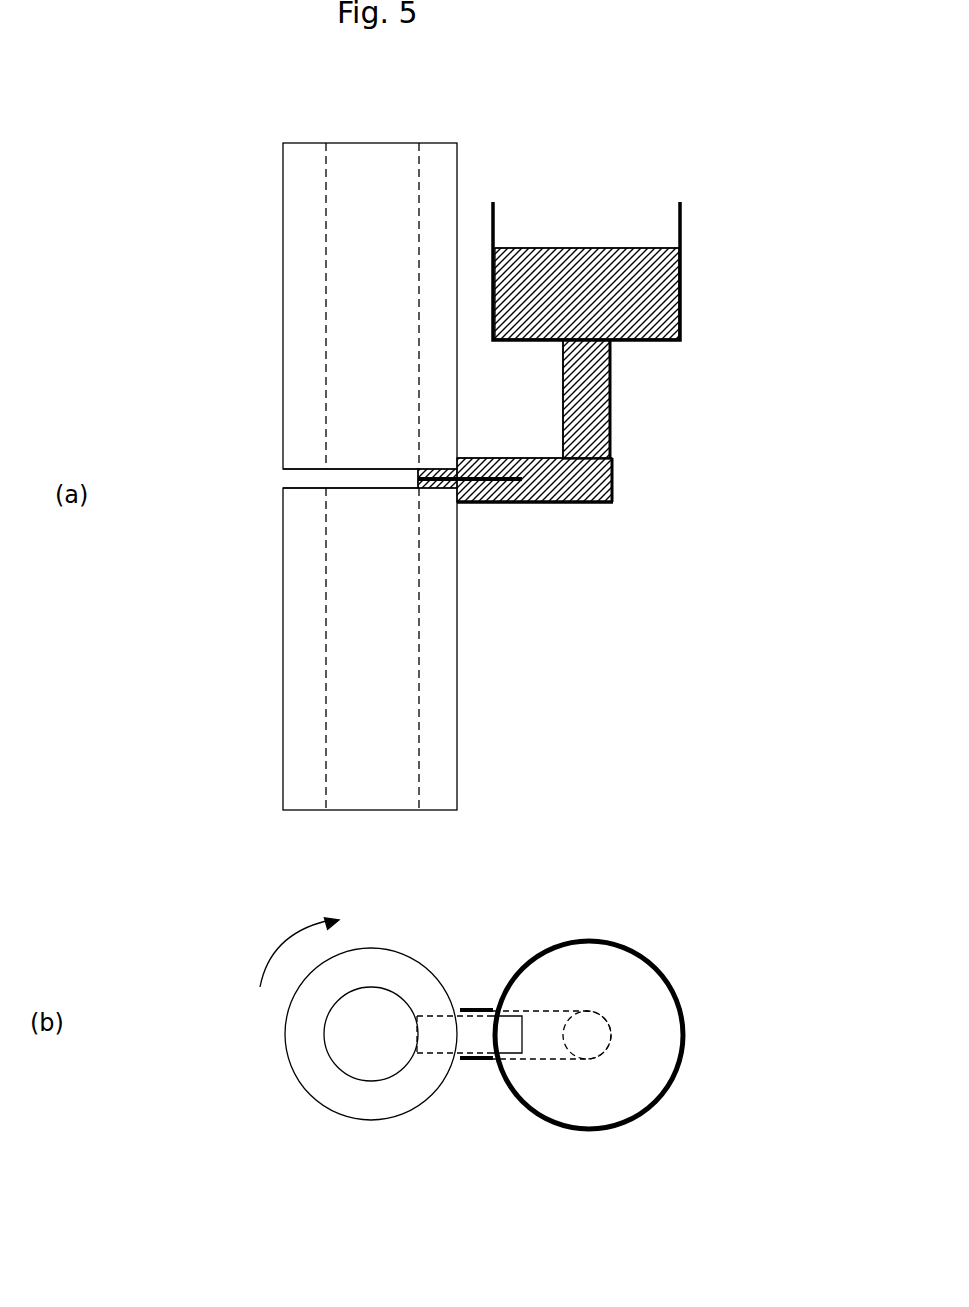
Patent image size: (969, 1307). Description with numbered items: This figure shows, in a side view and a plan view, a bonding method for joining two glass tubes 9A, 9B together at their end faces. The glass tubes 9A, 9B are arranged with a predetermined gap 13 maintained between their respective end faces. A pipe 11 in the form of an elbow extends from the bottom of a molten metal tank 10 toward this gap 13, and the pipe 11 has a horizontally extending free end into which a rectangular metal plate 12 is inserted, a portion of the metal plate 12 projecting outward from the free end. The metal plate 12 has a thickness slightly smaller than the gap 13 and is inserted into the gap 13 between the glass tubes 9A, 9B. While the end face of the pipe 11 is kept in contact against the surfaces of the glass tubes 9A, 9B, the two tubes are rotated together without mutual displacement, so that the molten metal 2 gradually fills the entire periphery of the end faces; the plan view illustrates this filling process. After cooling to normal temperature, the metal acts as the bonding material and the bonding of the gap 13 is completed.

The molten metal 2 is at (585, 247).
The glass tube 9A is at (283, 295).
The glass tube 9B is at (284, 620).
The molten metal tank 10 is at (682, 304).
The pipe 11 is at (612, 420).
The metal plate 12 is at (473, 503).
The gap 13 is at (283, 478).